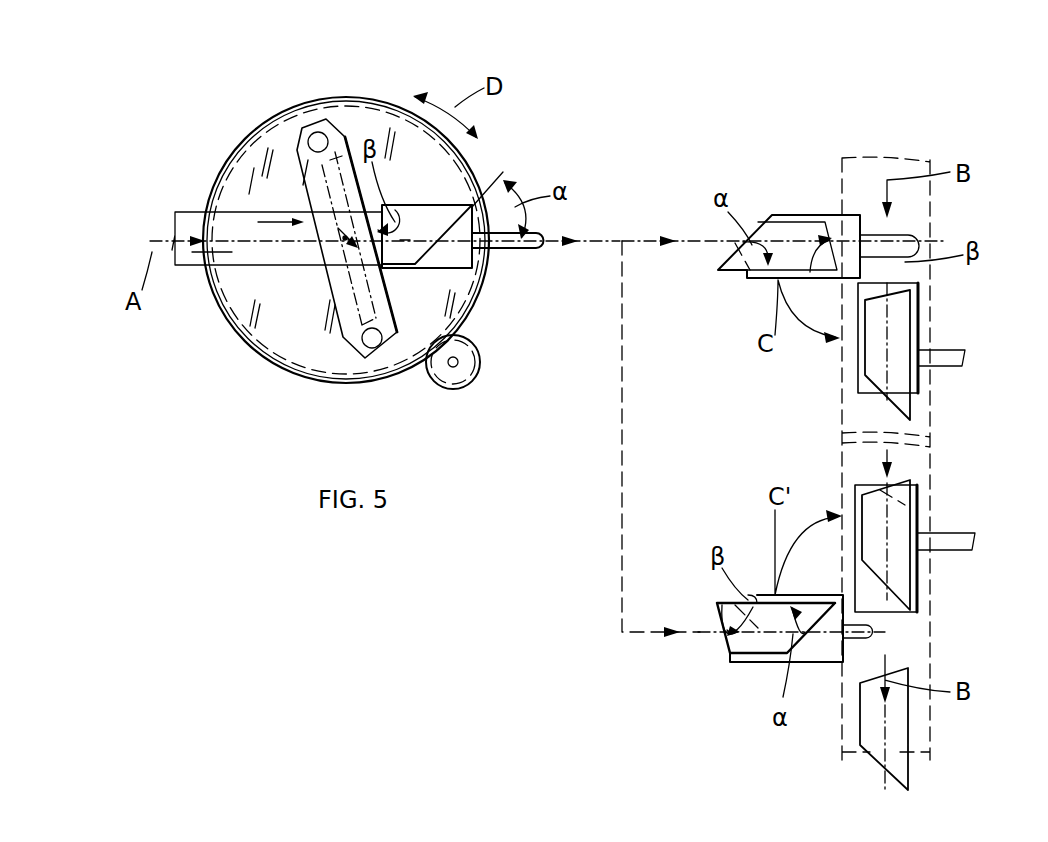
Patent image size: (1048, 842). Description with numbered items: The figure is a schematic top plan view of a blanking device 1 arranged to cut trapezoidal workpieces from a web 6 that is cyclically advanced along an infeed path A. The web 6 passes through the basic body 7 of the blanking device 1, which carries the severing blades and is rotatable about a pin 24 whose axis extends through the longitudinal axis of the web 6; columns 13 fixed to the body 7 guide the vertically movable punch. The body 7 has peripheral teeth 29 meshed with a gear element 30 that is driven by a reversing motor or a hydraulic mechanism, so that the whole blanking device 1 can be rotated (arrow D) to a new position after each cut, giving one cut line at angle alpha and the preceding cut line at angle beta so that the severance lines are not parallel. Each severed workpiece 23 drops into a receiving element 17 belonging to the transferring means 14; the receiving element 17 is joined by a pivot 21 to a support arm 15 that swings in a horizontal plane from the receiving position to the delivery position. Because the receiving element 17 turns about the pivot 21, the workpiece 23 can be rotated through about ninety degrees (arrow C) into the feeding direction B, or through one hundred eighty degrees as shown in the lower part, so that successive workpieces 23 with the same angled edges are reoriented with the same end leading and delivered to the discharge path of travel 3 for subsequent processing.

The blanking device 1 is at (368, 86).
The discharge path of travel 3 is at (945, 642).
The web 6 is at (195, 255).
The body 7 is at (450, 178).
The columns 13 is at (372, 347).
The transferring means 14 is at (795, 135).
The support arm 15 is at (525, 253).
The receiving element 17 is at (783, 214).
The pivot 21 is at (400, 240).
The workpiece 23 is at (775, 266).
The pin 24 is at (367, 235).
The peripheral teeth 29 is at (288, 108).
The gear element 30 is at (445, 378).